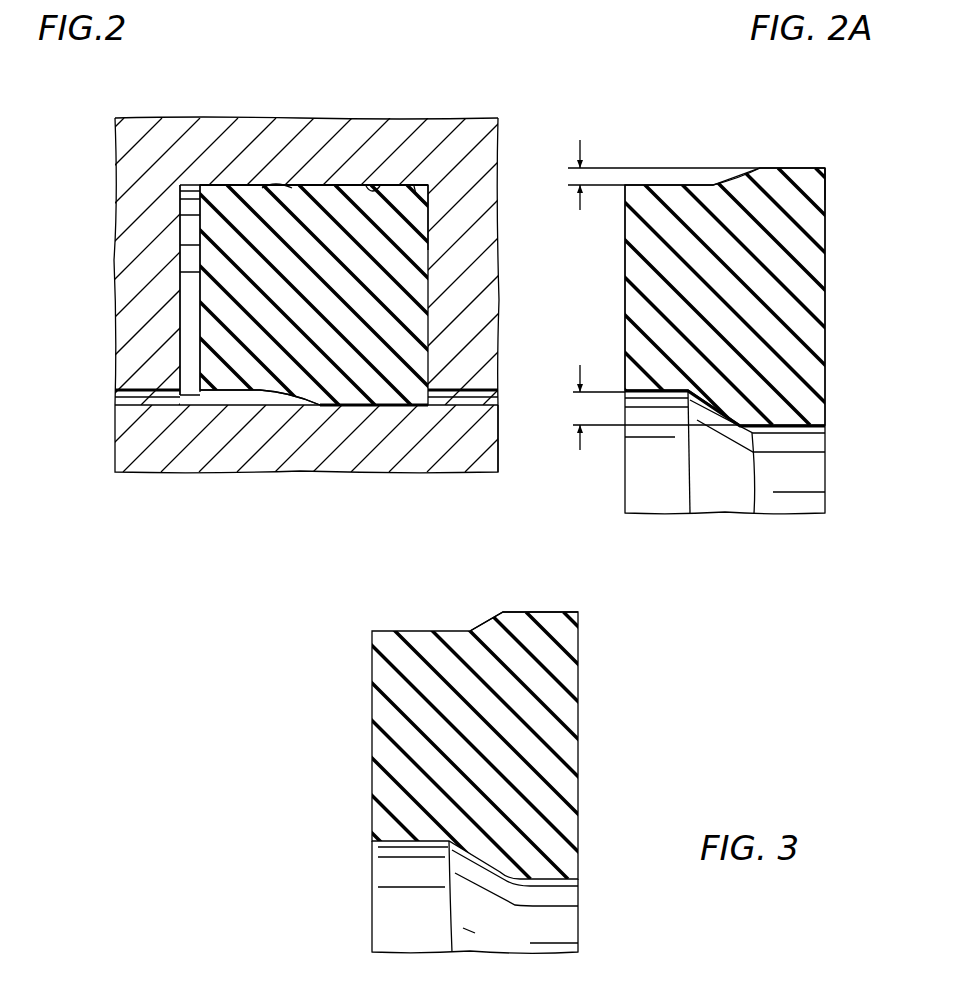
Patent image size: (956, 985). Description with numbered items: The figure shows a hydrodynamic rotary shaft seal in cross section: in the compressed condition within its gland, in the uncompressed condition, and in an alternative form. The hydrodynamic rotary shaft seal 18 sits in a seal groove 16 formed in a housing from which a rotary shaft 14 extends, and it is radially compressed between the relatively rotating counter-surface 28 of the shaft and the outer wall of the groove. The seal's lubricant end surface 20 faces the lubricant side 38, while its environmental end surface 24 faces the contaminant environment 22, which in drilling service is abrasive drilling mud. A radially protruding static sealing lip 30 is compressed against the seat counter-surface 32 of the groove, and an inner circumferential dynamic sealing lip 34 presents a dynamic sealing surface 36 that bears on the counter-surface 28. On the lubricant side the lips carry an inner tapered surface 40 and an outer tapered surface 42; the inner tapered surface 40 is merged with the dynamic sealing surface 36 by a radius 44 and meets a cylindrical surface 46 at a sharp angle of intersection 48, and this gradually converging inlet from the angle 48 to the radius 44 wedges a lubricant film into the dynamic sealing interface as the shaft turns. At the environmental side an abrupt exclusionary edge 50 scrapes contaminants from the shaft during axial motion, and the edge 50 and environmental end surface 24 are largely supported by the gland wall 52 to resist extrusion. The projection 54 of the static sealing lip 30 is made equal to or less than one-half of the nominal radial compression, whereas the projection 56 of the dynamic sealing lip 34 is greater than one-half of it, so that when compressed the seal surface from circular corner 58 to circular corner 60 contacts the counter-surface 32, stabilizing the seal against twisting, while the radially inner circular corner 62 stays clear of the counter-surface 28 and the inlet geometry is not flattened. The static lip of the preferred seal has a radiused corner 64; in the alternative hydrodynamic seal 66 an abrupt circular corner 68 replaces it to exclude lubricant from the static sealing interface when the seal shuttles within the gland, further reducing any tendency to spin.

In FIG. 2, the rotary shaft 14 is at (140, 445).
In FIG. 2, the seal groove 16 is at (188, 318).
In FIG. 2, the hydrodynamic rotary shaft seal 18 is at (263, 200).
In FIG. 2A, the hydrodynamic rotary shaft seal 18 is at (798, 252).
In FIG. 2, the lubricant end surface 20 is at (180, 272).
In FIG. 2A, the lubricant end surface 20 is at (625, 283).
In FIG. 2, the contaminant environment 22 is at (486, 395).
In FIG. 2, the environmental end surface 24 is at (432, 250).
In FIG. 2A, the environmental end surface 24 is at (828, 345).
In FIG. 2, the relatively rotating counter-surface 28 is at (130, 395).
In FIG. 2A, the static sealing lip 30 is at (800, 177).
In FIG. 2, the seat counter-surface 32 is at (364, 193).
In FIG. 2A, the dynamic sealing lip 34 is at (805, 433).
In FIG. 2, the dynamic sealing surface 36 is at (352, 405).
In FIG. 2A, the dynamic sealing surface 36 is at (790, 428).
In FIG. 2, the lubricant side 38 is at (263, 397).
In FIG. 2A, the inner tapered surface 40 is at (713, 443).
In FIG. 2A, the outer tapered surface 42 is at (740, 180).
In FIG. 2A, the radius 44 is at (750, 460).
In FIG. 2A, the cylindrical surface 46 is at (647, 396).
In FIG. 2A, the sharp angle of intersection 48 is at (690, 398).
In FIG. 2, the exclusionary edge 50 is at (432, 405).
In FIG. 2A, the exclusionary edge 50 is at (830, 428).
In FIG. 2, the gland wall 52 is at (433, 188).
In FIG. 2A, the projection of static sealing lip 54 is at (583, 175).
In FIG. 2A, the projection of dynamic sealing lip 56 is at (578, 408).
In FIG. 2, the circular corner 58 is at (200, 185).
In FIG. 2A, the circular corner 58 is at (625, 183).
In FIG. 2, the circular corner 60 is at (428, 196).
In FIG. 2A, the circular corner 60 is at (828, 168).
In FIG. 2, the radially inner circular corner 62 is at (197, 393).
In FIG. 2A, the radially inner circular corner 62 is at (625, 396).
In FIG. 2A, the radiused corner 64 is at (760, 167).
In FIG. 3, the hydrodynamic seal 66 is at (372, 708).
In FIG. 3, the abrupt circular corner 68 is at (503, 612).